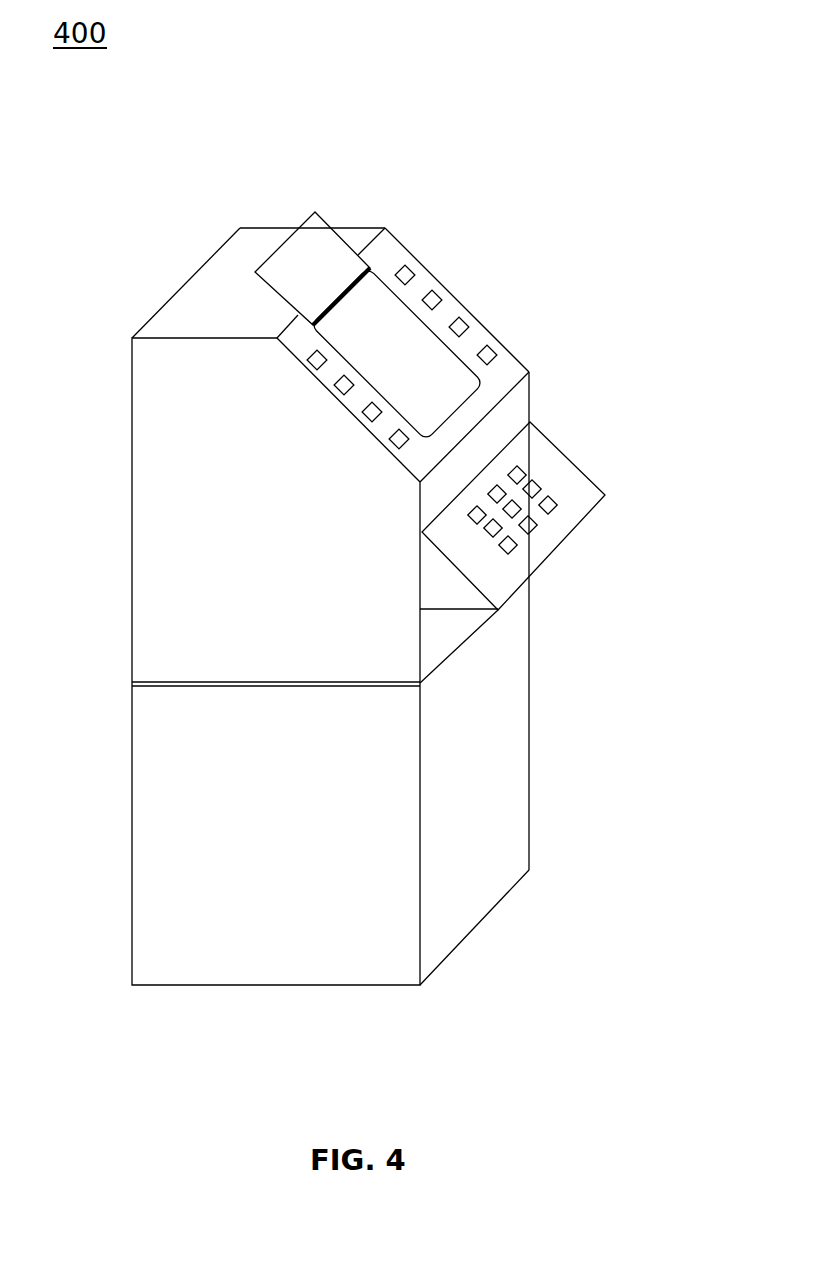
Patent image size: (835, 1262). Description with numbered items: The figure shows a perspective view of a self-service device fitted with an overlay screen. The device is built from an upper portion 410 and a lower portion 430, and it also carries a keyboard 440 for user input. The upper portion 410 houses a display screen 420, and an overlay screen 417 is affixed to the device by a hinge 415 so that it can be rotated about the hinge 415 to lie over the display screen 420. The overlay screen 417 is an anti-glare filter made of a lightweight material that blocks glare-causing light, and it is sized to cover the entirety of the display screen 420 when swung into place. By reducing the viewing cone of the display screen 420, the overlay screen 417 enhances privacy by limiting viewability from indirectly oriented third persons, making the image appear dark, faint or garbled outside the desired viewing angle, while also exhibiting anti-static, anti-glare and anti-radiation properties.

The upper portion 410 is at (183, 278).
The hinge 415 is at (370, 270).
The overlay screen 417 is at (317, 227).
The display screen 420 is at (448, 395).
The lower portion 430 is at (145, 859).
The keyboard 440 is at (600, 496).